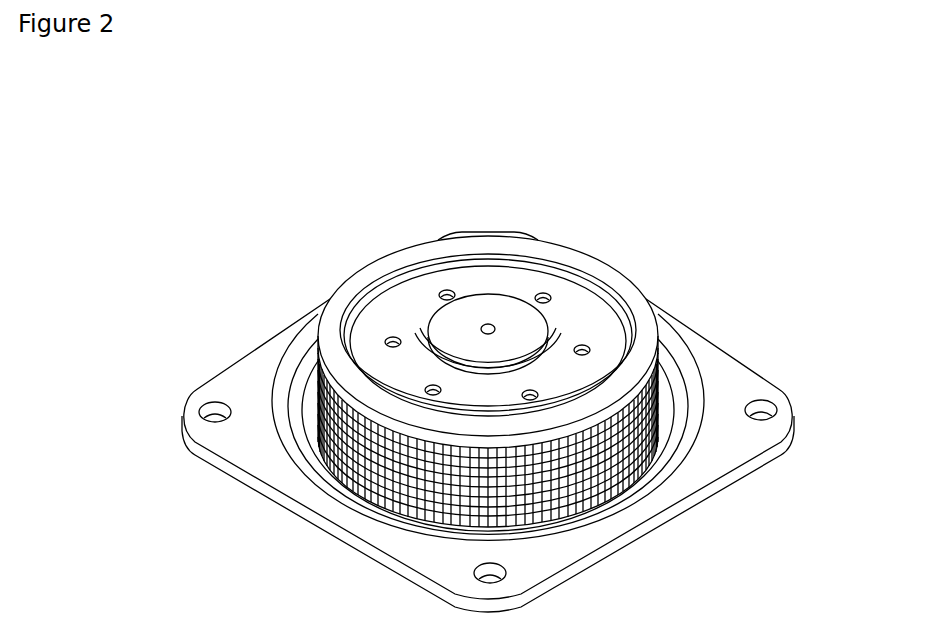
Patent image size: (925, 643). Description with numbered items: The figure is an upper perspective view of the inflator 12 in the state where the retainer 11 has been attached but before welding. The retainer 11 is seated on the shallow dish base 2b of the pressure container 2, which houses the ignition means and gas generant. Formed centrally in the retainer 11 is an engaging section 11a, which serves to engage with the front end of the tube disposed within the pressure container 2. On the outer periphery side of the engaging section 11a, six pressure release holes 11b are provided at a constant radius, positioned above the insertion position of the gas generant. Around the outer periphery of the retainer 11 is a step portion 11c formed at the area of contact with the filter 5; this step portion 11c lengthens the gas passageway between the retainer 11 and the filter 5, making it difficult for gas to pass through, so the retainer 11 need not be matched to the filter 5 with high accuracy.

The inflator 12 is at (522, 381).
The retainer 11 is at (495, 297).
The engaging section 11a is at (527, 327).
The pressure release holes 11b is at (449, 292).
The step portion 11c is at (361, 278).
The filter 5 is at (548, 487).
The pressure container 2 is at (528, 455).
The shallow dish base 2b is at (708, 450).